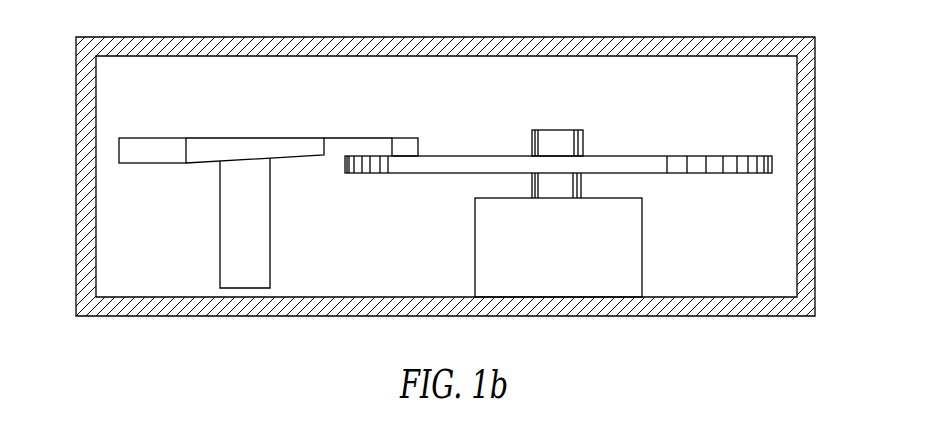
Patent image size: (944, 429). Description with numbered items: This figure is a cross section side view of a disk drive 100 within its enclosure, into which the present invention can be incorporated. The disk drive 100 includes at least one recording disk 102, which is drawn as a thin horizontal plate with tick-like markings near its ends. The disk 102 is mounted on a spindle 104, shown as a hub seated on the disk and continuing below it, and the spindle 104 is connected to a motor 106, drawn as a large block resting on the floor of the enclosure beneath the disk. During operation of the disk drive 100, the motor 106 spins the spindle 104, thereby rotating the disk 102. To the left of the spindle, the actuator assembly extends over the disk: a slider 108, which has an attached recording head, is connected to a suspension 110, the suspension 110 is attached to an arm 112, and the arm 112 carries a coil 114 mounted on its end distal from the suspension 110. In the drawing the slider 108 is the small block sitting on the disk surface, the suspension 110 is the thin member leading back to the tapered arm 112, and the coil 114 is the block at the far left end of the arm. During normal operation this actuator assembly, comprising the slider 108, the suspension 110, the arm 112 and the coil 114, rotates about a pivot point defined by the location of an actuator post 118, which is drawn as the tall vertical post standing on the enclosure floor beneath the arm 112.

The disk drive 100 is at (646, 339).
The recording disk 102 is at (677, 156).
The spindle 104 is at (562, 130).
The motor 106 is at (642, 238).
The slider 108 is at (409, 138).
The suspension 110 is at (359, 138).
The arm 112 is at (295, 138).
The coil 114 is at (152, 138).
The actuator post 118 is at (270, 229).